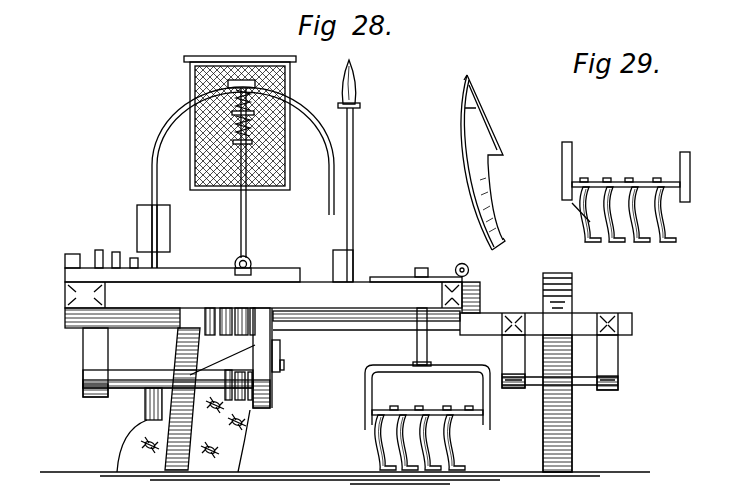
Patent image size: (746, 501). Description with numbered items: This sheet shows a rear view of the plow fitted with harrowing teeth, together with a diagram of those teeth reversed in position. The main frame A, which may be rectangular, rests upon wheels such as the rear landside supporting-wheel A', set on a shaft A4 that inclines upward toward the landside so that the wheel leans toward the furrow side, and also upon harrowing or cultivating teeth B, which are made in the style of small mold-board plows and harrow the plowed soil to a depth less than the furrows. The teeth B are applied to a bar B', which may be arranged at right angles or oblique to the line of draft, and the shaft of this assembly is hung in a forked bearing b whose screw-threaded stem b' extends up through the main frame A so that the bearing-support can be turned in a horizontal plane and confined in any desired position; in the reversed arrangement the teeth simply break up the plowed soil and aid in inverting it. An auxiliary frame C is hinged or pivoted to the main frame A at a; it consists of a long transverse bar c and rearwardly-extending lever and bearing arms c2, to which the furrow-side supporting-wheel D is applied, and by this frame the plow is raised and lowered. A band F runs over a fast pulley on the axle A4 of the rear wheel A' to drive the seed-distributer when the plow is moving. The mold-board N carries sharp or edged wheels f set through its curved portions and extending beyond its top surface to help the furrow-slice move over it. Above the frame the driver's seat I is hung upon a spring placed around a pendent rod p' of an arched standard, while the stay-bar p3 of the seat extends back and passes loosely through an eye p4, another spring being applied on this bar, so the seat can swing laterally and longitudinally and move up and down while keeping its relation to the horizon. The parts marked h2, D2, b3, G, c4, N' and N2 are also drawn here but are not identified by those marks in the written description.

In FIG. 28, the driver's seat I is at (232, 123).
In FIG. 28, the arch standard h2 is at (154, 211).
In FIG. 28, the pendent rod p' is at (243, 151).
In FIG. 28, the stay-bar p3 is at (246, 169).
In FIG. 28, the eye p4 is at (254, 264).
In FIG. 28, the flag staff D2 is at (353, 171).
In FIG. 28, the main frame A is at (272, 289).
In FIG. 28, the stem b' is at (426, 263).
In FIG. 28, the eye bolt b3 is at (469, 260).
In FIG. 28, the transverse bar c is at (366, 324).
In FIG. 28, the pivot a is at (448, 338).
In FIG. 28, the auxiliary frame C is at (546, 316).
In FIG. 28, the rearwardly-extending lever and bearing arms c2 is at (560, 362).
In FIG. 28, the furrow-side supporting-wheel D is at (565, 372).
In FIG. 28, the shaft A4 is at (168, 362).
In FIG. 28, the block G is at (147, 404).
In FIG. 28, the rear landside supporting-wheel A' is at (182, 399).
In FIG. 28, the band F is at (222, 354).
In FIG. 28, the bracket c4 is at (276, 358).
In FIG. 28, the mold-board N is at (311, 273).
In FIG. 28, the blade wing N' is at (489, 119).
In FIG. 28, the blade point N2 is at (463, 67).
In FIG. 28, the sharp or edged wheels f is at (191, 434).
In FIG. 28, the forked bearing b is at (426, 397).
In FIG. 29, the forked bearing b is at (625, 172).
In FIG. 28, the bar B' is at (427, 403).
In FIG. 29, the bar B' is at (626, 175).
In FIG. 28, the harrowing or cultivating teeth B is at (434, 442).
In FIG. 29, the harrowing or cultivating teeth B is at (633, 214).